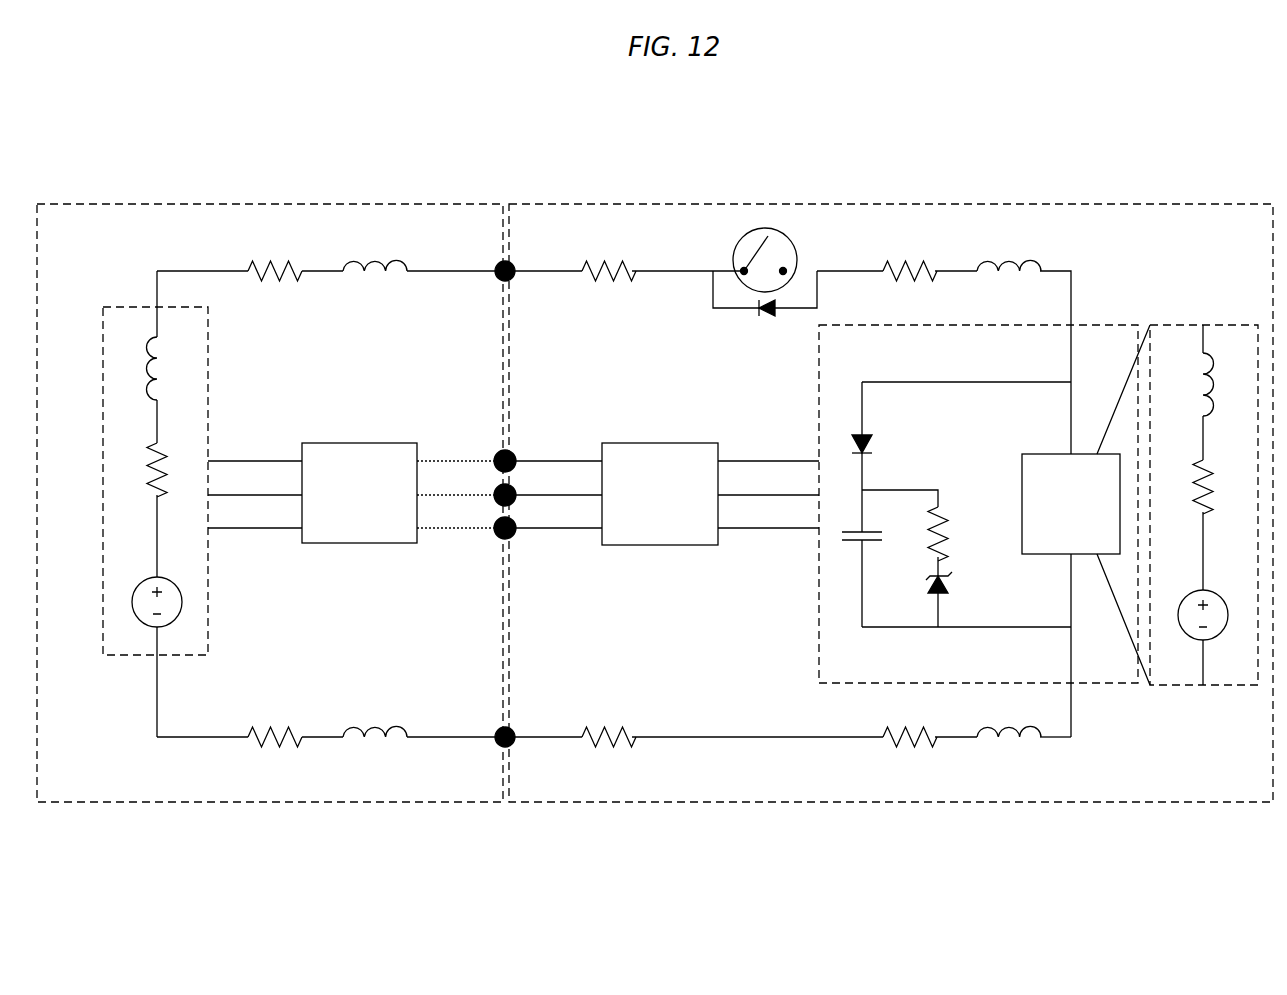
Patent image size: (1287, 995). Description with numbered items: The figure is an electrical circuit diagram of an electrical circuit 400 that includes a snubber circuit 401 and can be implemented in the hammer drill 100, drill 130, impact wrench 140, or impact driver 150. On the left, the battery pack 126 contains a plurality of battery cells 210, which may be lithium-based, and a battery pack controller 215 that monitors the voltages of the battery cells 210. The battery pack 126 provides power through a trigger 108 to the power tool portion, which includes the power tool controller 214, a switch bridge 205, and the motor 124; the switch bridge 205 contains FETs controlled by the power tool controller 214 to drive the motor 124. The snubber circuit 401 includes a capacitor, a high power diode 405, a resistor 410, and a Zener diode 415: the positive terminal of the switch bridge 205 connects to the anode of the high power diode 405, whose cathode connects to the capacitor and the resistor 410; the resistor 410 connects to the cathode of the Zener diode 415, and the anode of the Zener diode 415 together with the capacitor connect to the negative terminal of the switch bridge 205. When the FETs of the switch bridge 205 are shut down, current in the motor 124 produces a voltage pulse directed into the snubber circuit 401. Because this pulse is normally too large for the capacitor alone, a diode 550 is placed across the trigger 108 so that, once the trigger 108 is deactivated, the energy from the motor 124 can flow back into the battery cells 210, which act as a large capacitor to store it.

The electrical circuit 400 is at (423, 132).
The battery pack 126 is at (220, 204).
The hammer drill 100 is at (891, 470).
The drill 130 is at (891, 470).
The impact wrench 140 is at (891, 470).
The impact driver 150 is at (887, 204).
The trigger 108 is at (768, 236).
The diode 550 is at (742, 310).
The battery cells 210 is at (209, 376).
The battery pack controller 215 is at (360, 443).
The power tool controller 214 is at (660, 443).
The snubber circuit 401 is at (819, 418).
The high power diode 405 is at (863, 427).
The resistor 410 is at (940, 505).
The Zener diode 415 is at (934, 595).
The switch bridge 205 is at (1044, 454).
The motor 124 is at (1203, 325).